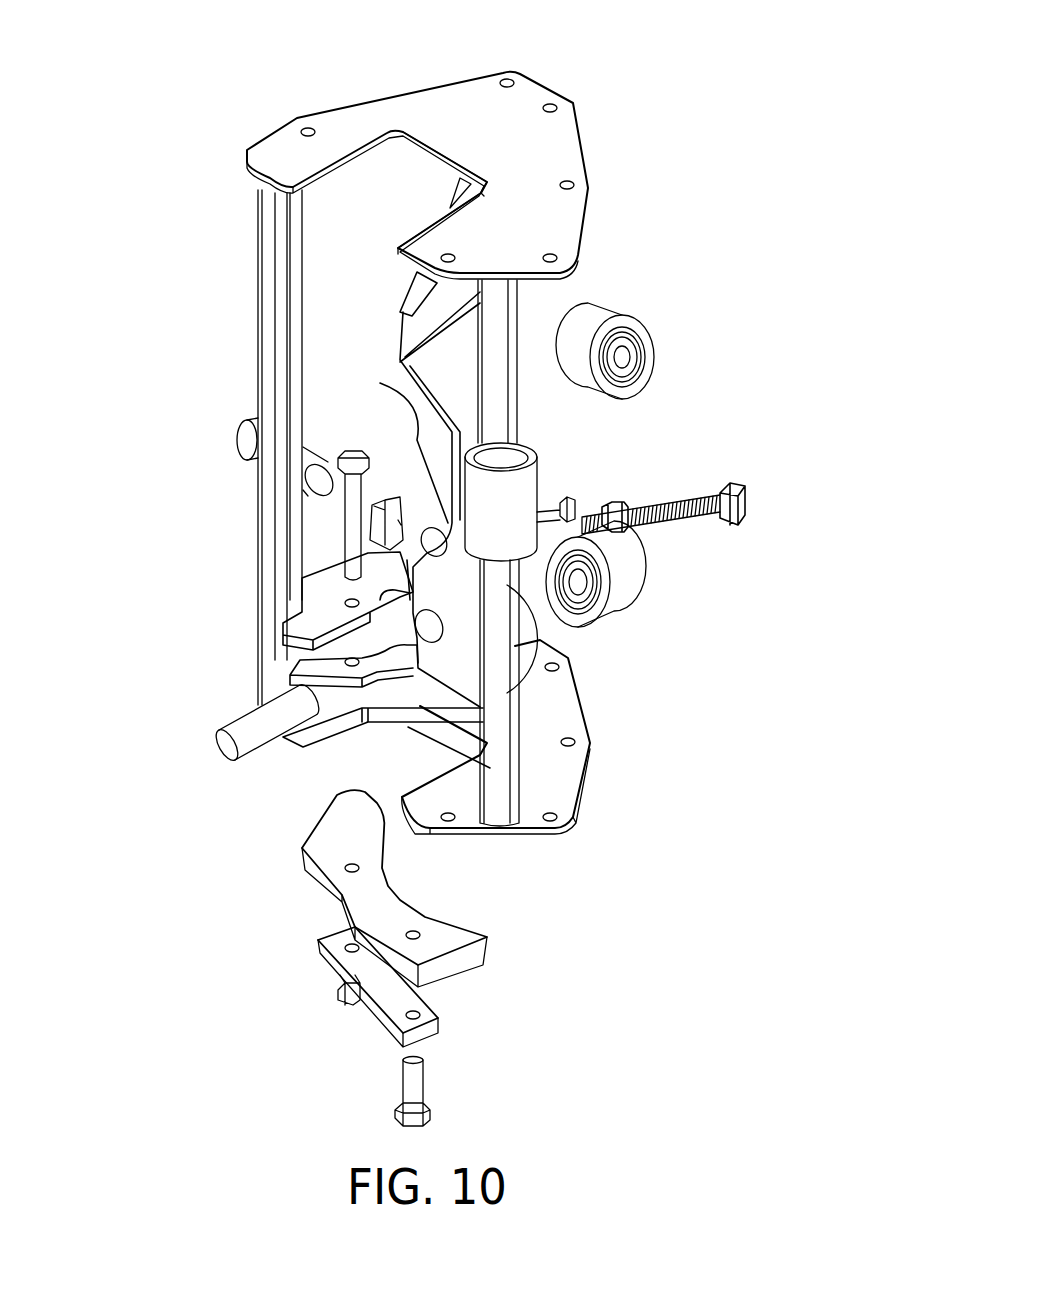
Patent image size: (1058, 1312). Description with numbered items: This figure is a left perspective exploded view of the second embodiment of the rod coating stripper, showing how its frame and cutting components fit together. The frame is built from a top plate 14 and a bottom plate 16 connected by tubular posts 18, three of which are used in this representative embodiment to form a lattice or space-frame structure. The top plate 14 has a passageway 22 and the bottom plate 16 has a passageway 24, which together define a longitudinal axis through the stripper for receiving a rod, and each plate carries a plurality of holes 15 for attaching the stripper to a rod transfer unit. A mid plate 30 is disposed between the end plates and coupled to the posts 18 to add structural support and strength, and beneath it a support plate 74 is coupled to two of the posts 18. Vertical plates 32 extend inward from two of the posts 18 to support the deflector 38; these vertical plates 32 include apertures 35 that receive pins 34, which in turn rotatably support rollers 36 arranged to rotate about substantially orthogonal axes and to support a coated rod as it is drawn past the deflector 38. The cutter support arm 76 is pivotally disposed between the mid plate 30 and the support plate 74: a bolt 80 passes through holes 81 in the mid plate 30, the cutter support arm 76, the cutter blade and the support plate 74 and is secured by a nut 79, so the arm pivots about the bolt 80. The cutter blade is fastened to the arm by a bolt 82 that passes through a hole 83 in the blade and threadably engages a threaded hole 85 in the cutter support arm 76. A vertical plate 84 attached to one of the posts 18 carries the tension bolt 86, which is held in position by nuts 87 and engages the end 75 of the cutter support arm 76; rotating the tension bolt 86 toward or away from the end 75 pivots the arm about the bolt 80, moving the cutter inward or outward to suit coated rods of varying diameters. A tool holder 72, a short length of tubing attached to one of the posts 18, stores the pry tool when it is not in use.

The top plate 14 is at (592, 168).
The holes 15 is at (511, 76).
The bottom plate 16 is at (563, 697).
The posts 18 is at (256, 285).
The passageway 22 is at (385, 185).
The passageway 24 is at (367, 747).
The mid plate 30 is at (297, 638).
The vertical plates 32 is at (457, 350).
The pins 34 is at (238, 423).
The apertures 35 is at (435, 530).
The rollers 36 is at (625, 299).
The deflector 38 is at (396, 294).
The tool holder 72 is at (542, 455).
The support plate 74 is at (363, 680).
The end 75 is at (340, 797).
The cutter support arm 76 is at (494, 940).
The nut 79 is at (350, 1003).
The bolt 80 is at (349, 452).
The holes 81 is at (350, 601).
The bolt 82 is at (430, 1092).
The hole 83 is at (420, 1006).
The vertical plate 84 is at (383, 498).
The threaded hole 85 is at (414, 928).
The tension bolt 86 is at (702, 525).
The nuts 87 is at (622, 496).